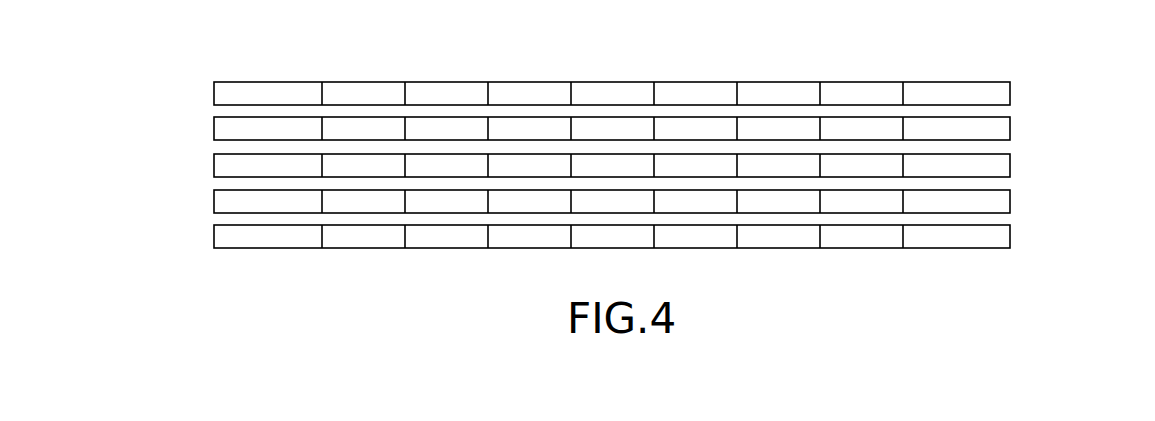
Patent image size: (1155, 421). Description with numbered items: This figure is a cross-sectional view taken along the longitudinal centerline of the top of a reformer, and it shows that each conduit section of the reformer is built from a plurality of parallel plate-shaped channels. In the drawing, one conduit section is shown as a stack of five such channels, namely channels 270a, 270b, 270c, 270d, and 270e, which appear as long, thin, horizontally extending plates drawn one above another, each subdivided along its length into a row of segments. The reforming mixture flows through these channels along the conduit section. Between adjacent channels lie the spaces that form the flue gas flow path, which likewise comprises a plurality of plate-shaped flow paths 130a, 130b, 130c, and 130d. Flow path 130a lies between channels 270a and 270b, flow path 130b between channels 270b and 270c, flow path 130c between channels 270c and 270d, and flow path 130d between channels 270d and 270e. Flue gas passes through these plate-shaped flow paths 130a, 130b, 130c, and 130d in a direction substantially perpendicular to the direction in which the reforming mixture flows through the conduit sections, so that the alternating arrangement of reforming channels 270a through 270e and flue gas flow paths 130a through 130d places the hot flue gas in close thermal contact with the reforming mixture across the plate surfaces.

The plate-shaped flow path 130a is at (220, 110).
The plate-shaped flow path 130b is at (220, 146).
The plate-shaped flow path 130c is at (220, 184).
The plate-shaped flow path 130d is at (221, 220).
The channel 270a is at (1010, 93).
The channel 270b is at (1010, 128).
The channel 270c is at (1010, 165).
The channel 270d is at (1010, 202).
The channel 270e is at (1010, 240).